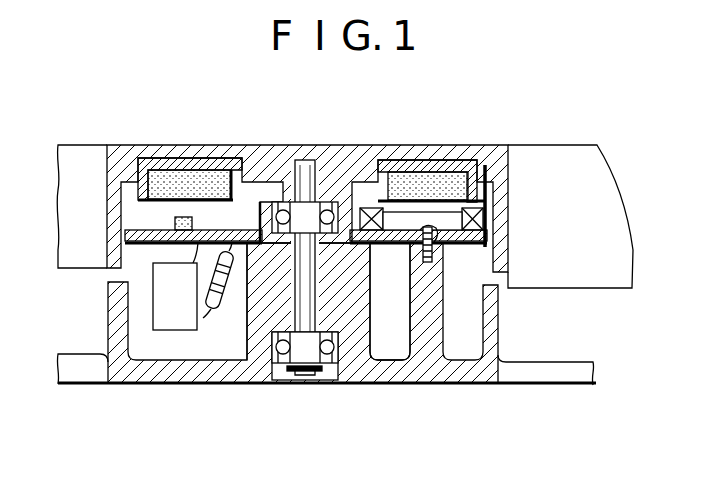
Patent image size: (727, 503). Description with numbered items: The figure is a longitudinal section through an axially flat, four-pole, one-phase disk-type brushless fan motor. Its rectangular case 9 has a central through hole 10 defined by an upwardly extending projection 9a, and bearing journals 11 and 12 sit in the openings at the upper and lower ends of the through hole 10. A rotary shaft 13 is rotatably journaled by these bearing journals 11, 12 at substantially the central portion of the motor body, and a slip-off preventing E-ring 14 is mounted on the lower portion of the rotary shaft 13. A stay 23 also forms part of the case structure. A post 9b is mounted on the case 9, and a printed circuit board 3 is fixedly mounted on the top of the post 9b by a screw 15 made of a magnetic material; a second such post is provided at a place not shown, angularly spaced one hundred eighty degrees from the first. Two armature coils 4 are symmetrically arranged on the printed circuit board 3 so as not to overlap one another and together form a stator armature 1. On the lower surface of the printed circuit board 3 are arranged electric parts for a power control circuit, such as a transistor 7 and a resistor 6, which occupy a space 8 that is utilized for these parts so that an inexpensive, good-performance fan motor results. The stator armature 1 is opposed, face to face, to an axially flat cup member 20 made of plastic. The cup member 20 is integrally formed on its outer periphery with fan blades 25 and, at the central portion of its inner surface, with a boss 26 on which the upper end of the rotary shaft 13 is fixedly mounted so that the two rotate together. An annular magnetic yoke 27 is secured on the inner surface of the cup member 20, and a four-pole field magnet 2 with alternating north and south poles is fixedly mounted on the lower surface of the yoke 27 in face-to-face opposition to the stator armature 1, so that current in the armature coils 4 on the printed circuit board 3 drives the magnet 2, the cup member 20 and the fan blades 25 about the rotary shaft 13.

The stator armature 1 is at (482, 200).
The field magnet 2 is at (458, 182).
The printed circuit board 3 is at (496, 224).
The armature coils 4 is at (484, 224).
The resistor 6 is at (203, 318).
The transistor 7 is at (170, 318).
The space 8 is at (388, 365).
The case 9 is at (428, 372).
The projection 9a is at (247, 325).
The post 9b is at (417, 312).
The through hole 10 is at (330, 378).
The bearing journal 11 is at (280, 203).
The bearing journal 12 is at (275, 362).
The rotary shaft 13 is at (305, 162).
The slip-off preventing E-ring 14 is at (293, 366).
The screw 15 is at (435, 243).
The cup member 20 is at (434, 145).
The stay 23 is at (86, 378).
The fan blades 25 is at (584, 168).
The boss 26 is at (328, 192).
The magnetic yoke 27 is at (398, 166).